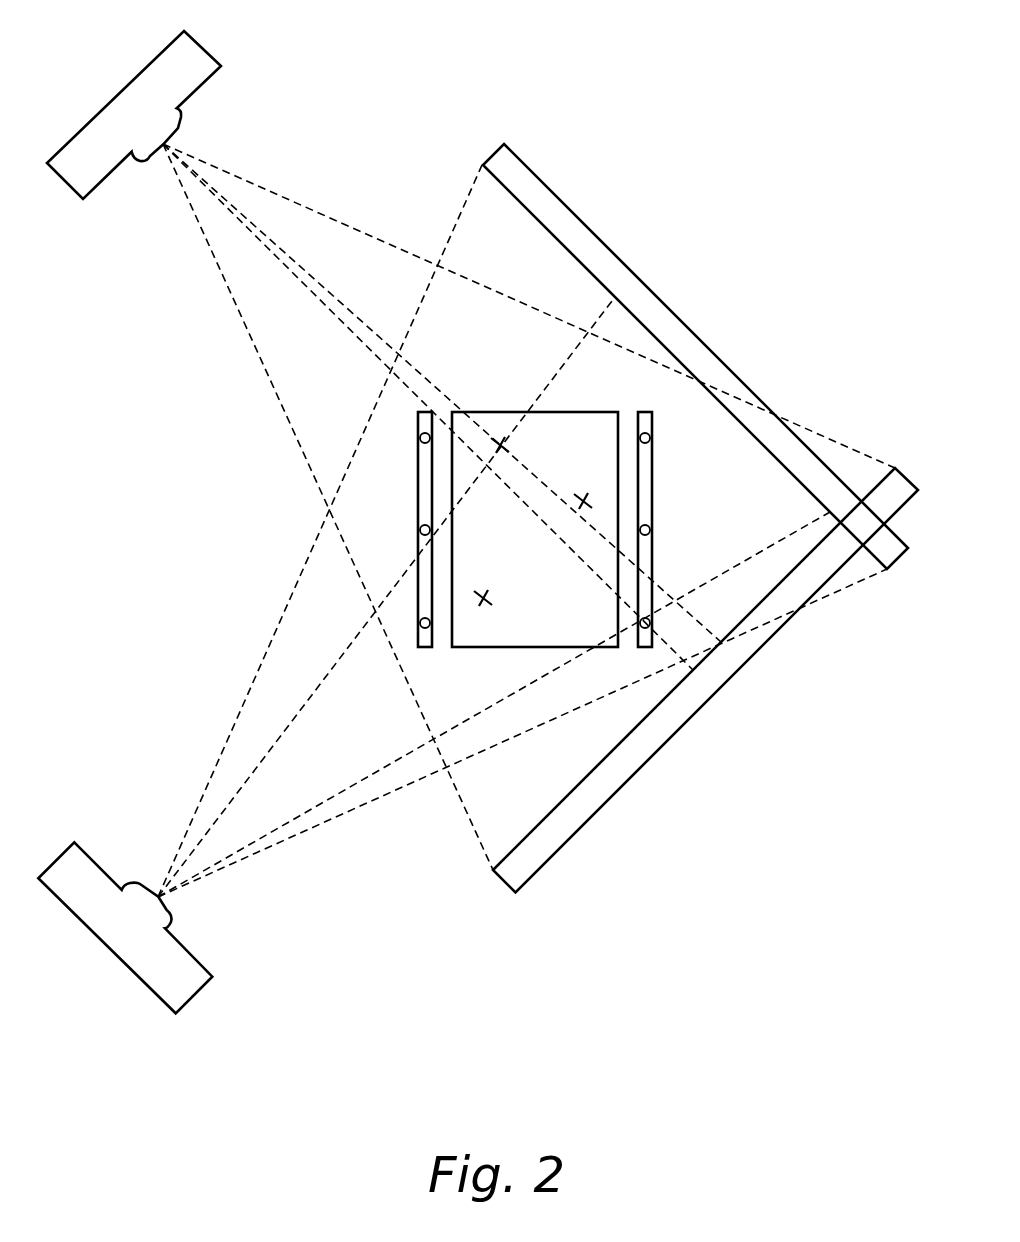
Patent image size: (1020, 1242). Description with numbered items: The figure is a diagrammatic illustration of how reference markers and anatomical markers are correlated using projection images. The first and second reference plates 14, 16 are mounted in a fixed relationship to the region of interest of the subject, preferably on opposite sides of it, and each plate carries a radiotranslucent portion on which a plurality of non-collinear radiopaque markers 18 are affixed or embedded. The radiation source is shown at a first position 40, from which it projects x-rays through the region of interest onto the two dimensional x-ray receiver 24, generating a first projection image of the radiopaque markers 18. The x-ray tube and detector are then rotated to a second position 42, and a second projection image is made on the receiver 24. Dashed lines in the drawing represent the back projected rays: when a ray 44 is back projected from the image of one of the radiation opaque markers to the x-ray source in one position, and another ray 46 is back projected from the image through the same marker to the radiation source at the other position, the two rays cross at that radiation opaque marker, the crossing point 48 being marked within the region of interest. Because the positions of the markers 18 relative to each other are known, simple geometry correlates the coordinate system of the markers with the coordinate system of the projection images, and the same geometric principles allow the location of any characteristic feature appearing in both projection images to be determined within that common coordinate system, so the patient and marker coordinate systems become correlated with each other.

The first reference plate 14 is at (652, 490).
The second reference plate 16 is at (418, 478).
The radiopaque markers 18 is at (649, 437).
The x-ray receiver 24 is at (788, 442).
The first position 40 is at (247, 50).
The second position 42 is at (228, 1011).
The ray 44 is at (665, 643).
The another ray 46 is at (728, 572).
The reference point 48 is at (505, 445).